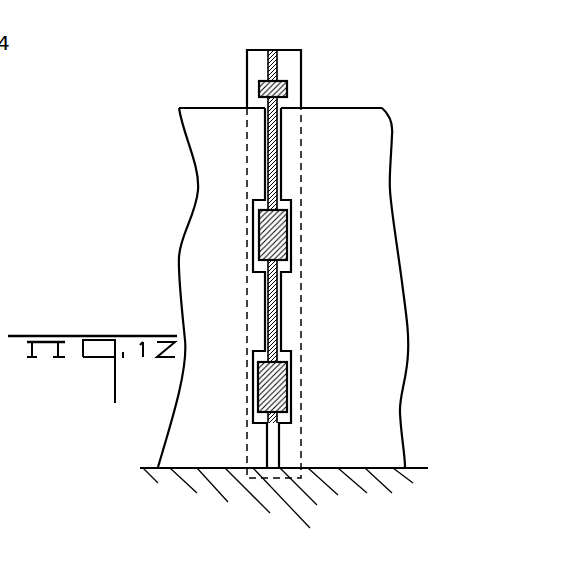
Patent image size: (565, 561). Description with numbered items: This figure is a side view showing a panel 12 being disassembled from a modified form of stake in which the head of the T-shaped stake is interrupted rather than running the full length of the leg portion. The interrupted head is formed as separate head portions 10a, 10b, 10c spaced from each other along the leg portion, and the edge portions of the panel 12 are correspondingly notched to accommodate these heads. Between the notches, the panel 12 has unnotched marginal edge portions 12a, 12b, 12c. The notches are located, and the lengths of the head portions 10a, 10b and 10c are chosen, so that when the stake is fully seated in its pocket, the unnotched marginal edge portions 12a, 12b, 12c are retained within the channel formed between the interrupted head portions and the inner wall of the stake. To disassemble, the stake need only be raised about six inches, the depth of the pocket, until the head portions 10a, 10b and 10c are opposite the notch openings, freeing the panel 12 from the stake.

The panel 12 is at (197, 242).
The unnotched marginal edge portion 12a is at (259, 153).
The unnotched marginal edge portion 12b is at (262, 313).
The unnotched marginal edge portion 12c is at (262, 443).
The head portion 10a is at (288, 89).
The head portion 10b is at (280, 237).
The head portion 10c is at (270, 388).